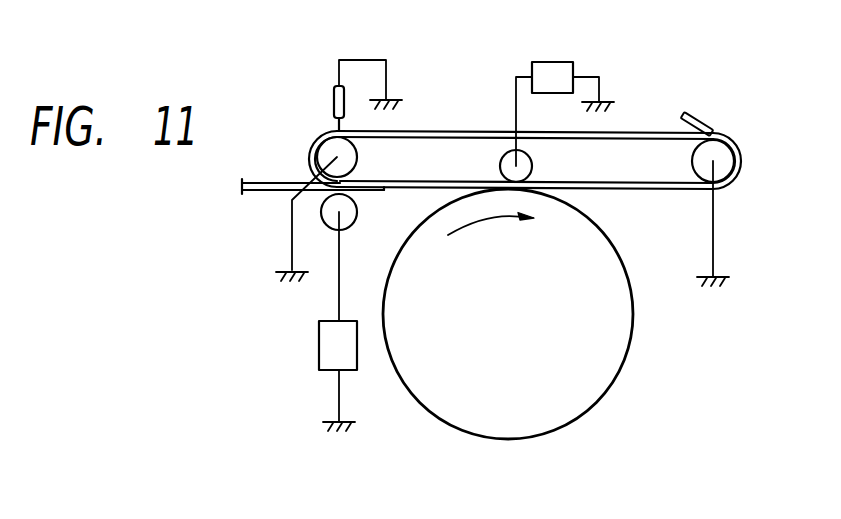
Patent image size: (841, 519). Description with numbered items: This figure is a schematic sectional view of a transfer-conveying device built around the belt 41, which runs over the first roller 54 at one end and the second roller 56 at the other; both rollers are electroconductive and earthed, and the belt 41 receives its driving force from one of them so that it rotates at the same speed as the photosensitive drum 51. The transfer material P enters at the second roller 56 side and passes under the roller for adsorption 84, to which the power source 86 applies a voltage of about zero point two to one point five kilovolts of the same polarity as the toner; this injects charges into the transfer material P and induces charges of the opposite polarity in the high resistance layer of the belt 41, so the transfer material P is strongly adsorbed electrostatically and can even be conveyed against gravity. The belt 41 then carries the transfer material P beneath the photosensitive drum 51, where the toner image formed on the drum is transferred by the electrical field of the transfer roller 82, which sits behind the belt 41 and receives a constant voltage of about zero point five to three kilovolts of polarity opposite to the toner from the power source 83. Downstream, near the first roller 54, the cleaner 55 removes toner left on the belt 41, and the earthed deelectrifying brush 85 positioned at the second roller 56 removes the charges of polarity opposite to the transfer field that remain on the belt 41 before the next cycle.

The belt 41 is at (662, 190).
The photosensitive drum 51 is at (628, 355).
The first roller 54 is at (741, 160).
The cleaner 55 is at (699, 116).
The second roller 56 is at (357, 152).
The transfer roller 82 is at (531, 163).
The power source 83 is at (557, 62).
The roller for adsorption 84 is at (357, 208).
The deelectrifying brush 85 is at (334, 97).
The power source 86 is at (319, 352).
The transfer material P is at (258, 192).